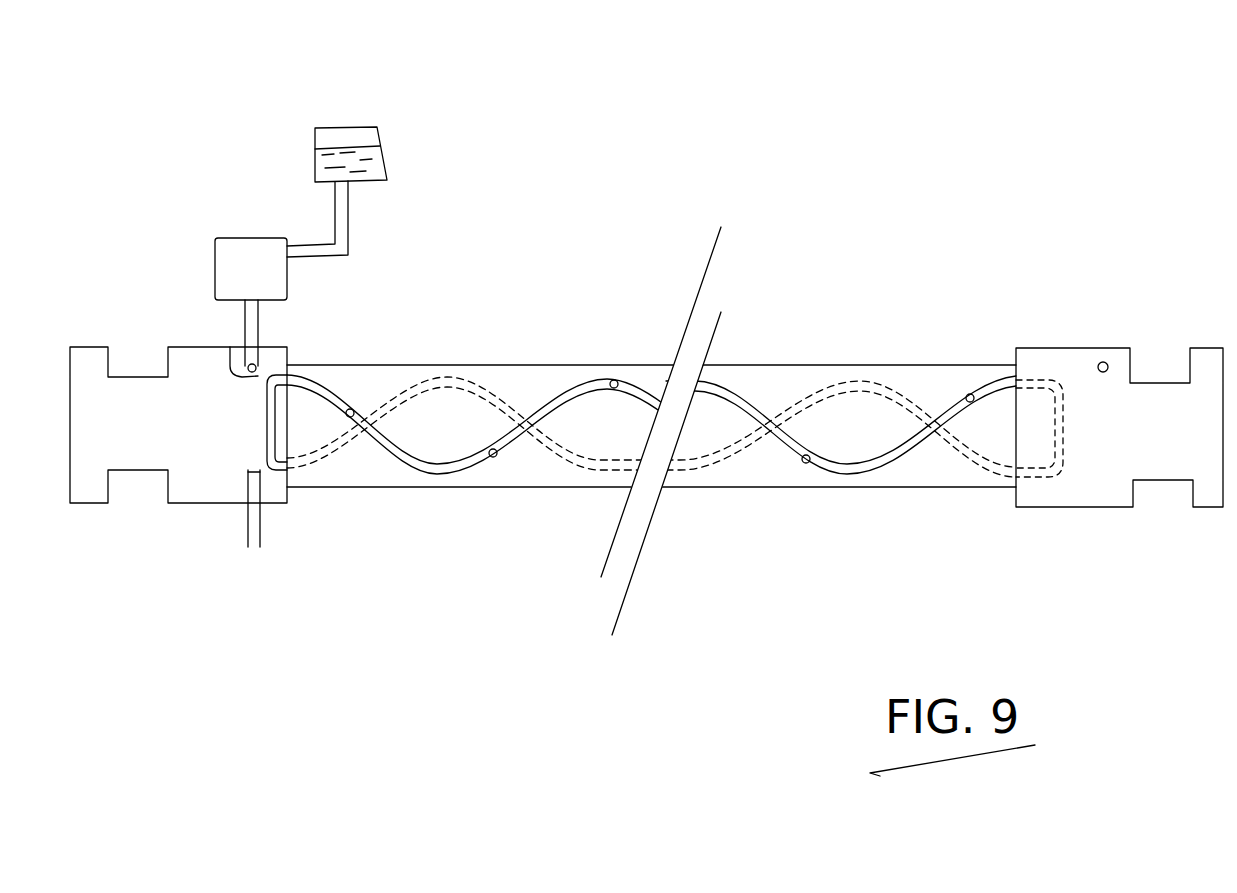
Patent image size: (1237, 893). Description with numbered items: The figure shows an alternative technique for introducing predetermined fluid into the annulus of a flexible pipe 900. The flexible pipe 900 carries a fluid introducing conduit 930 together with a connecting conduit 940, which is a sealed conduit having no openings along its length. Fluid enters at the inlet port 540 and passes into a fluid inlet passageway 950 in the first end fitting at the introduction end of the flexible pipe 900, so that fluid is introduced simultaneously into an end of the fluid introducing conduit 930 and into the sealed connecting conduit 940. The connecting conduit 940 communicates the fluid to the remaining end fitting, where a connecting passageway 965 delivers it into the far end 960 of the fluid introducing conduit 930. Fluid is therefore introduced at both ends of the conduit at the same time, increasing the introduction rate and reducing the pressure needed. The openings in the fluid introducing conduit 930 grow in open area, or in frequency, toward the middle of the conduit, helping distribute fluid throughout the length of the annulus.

The flexible pipe 900 is at (830, 77).
The inlet port 540 is at (230, 347).
The fluid introducing conduit 930 is at (493, 455).
The connecting conduit 940 is at (741, 461).
The fluid inlet passageway 950 is at (273, 430).
The far end 960 is at (1005, 375).
The connecting passageway 965 is at (1055, 465).